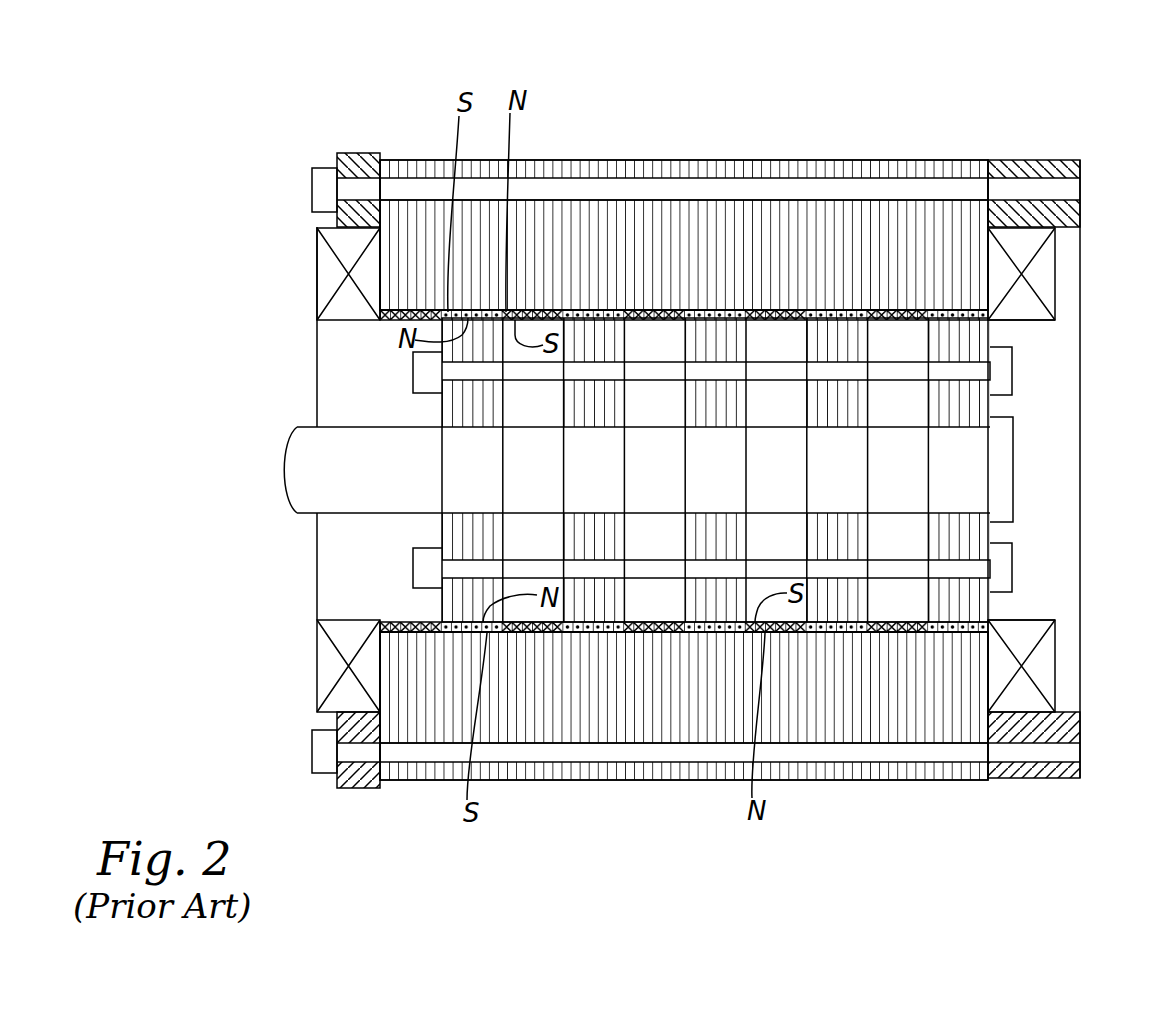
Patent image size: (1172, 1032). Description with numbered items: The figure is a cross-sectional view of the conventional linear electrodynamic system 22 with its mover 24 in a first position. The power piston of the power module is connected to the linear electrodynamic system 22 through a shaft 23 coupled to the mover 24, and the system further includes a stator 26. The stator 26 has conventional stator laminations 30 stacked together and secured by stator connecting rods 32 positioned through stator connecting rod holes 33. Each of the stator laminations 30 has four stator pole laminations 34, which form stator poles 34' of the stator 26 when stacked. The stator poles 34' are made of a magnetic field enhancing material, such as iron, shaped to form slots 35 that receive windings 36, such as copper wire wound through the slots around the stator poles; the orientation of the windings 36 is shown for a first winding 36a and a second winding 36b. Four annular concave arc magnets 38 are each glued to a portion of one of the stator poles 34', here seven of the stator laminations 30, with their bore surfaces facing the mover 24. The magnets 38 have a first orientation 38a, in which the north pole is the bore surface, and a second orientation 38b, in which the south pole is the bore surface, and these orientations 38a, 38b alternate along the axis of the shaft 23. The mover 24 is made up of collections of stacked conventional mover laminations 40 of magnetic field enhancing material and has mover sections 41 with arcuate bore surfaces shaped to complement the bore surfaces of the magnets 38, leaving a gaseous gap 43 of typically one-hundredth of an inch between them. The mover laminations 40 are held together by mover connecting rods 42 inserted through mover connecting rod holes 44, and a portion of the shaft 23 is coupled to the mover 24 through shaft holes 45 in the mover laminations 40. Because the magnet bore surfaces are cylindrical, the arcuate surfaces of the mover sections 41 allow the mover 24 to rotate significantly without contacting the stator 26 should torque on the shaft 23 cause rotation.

The linear electrodynamic system 22 is at (796, 104).
The shaft 23 is at (295, 426).
The mover 24 is at (1044, 448).
The stator 26 is at (535, 148).
The stator laminations 30 is at (387, 172).
The stator connecting rods 32 is at (428, 186).
The stator connecting rod holes 33 is at (567, 186).
The stator pole laminations 34 is at (755, 476).
The stator poles 34' is at (684, 457).
The slots 35 is at (990, 260).
The windings 36 is at (317, 282).
The first winding 36a is at (317, 248).
The second winding 36b is at (317, 690).
The annular concave arc magnets 38 is at (388, 320).
The first orientation 38a is at (478, 312).
The second orientation 38b is at (398, 312).
The mover laminations 40 is at (723, 418).
The mover sections 41 is at (442, 410).
The mover connecting rods 42 is at (763, 363).
The gaseous gap 43 is at (1004, 320).
The mover connecting rod holes 44 is at (778, 562).
The shaft holes 45 is at (472, 428).